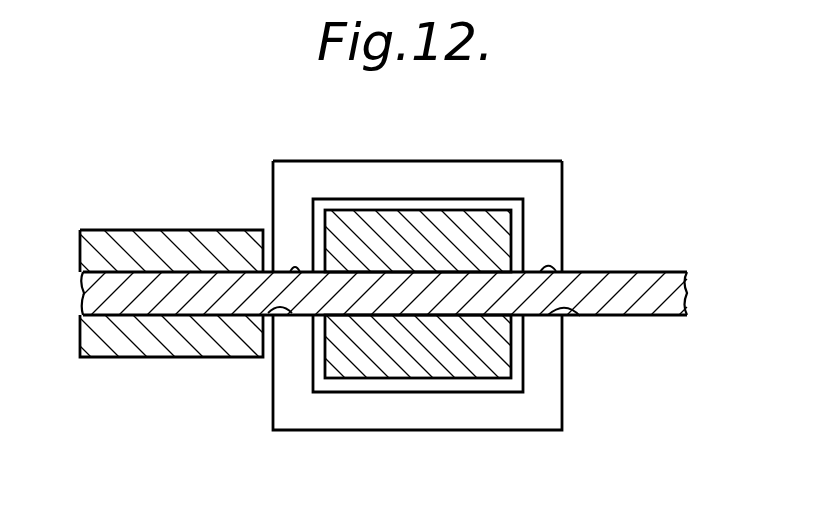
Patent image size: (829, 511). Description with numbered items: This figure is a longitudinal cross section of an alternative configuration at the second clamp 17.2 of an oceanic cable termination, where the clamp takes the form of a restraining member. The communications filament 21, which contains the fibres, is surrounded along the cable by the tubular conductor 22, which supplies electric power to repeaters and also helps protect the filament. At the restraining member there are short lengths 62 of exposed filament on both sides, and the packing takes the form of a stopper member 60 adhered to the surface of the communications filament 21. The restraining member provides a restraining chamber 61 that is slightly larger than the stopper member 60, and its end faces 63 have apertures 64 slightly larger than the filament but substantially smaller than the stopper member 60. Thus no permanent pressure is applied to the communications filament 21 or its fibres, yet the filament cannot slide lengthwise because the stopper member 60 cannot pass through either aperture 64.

The second clamp 17.2 is at (422, 166).
The communications filament 21 is at (83, 300).
The tubular conductor 22 is at (128, 237).
The stopper member 60 is at (421, 353).
The restraining chamber 61 is at (518, 213).
The short lengths of exposed filament 62 is at (262, 313).
The end faces 63 is at (273, 170).
The apertures 64 is at (295, 272).